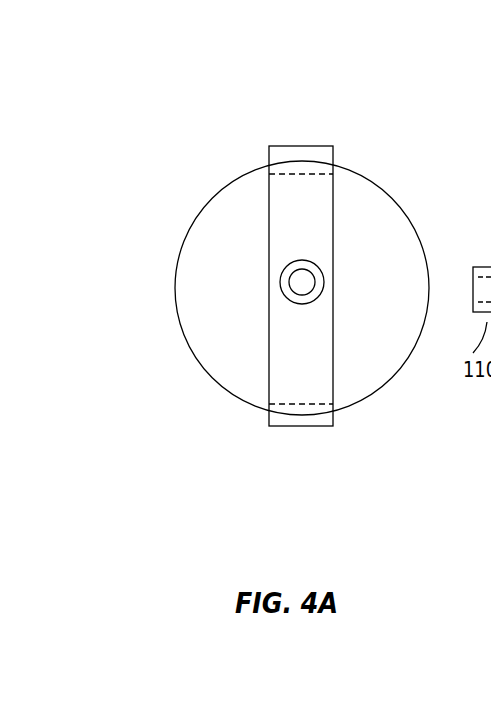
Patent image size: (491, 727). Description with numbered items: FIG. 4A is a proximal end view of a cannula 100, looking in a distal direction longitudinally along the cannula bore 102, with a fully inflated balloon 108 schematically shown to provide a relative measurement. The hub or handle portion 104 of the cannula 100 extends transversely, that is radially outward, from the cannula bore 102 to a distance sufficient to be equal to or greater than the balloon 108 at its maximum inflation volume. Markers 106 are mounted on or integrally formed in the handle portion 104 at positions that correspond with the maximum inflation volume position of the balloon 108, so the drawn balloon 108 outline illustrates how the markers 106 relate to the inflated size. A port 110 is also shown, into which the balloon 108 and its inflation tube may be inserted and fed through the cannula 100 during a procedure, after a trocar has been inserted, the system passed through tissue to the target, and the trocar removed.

The cannula 100 is at (288, 124).
The cannula bore 102 is at (309, 292).
The hub or handle portion 104 is at (285, 203).
The markers 106 is at (310, 163).
The balloon 108 is at (229, 370).
The port 110 is at (312, 262).